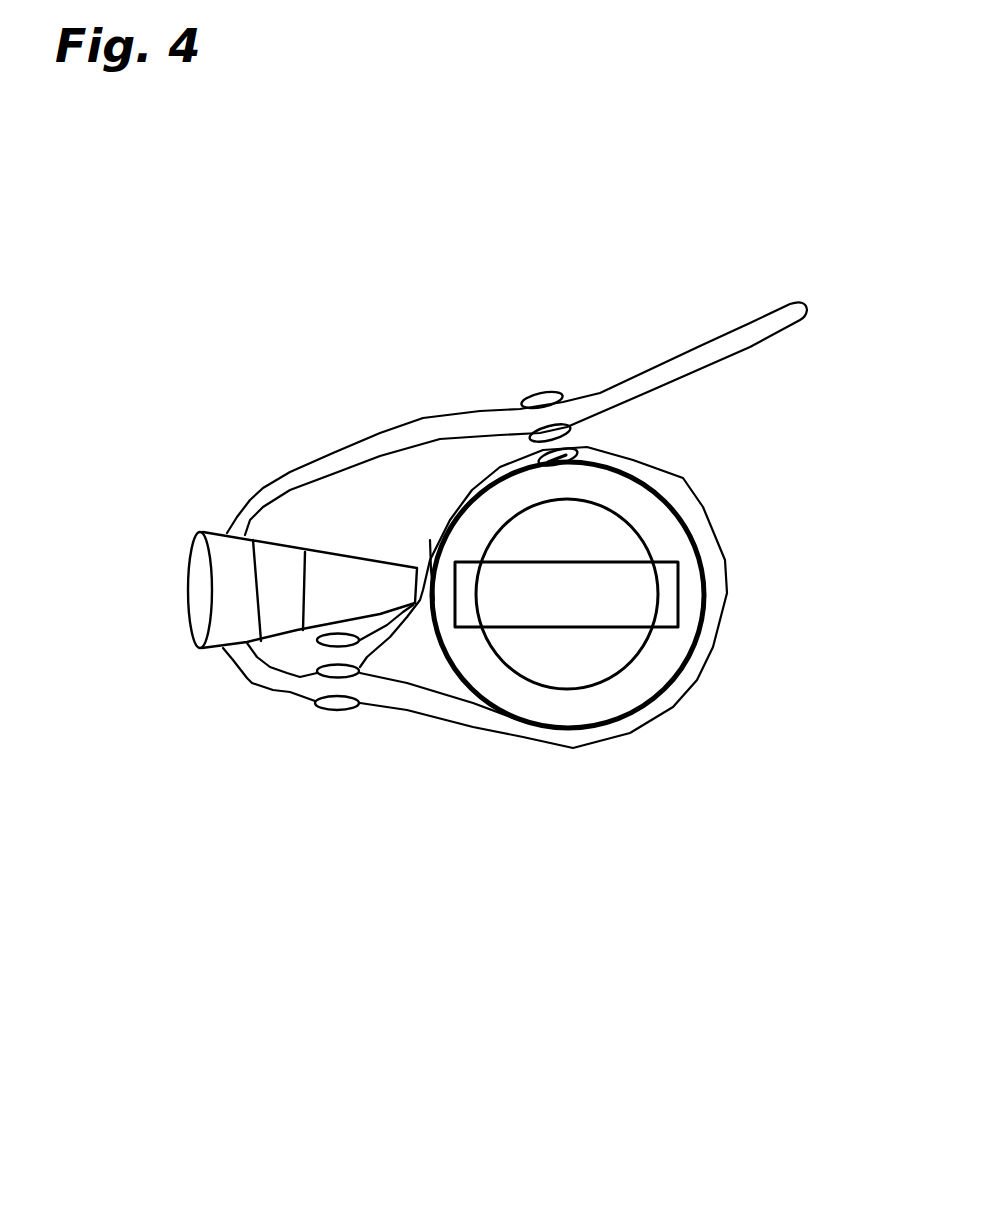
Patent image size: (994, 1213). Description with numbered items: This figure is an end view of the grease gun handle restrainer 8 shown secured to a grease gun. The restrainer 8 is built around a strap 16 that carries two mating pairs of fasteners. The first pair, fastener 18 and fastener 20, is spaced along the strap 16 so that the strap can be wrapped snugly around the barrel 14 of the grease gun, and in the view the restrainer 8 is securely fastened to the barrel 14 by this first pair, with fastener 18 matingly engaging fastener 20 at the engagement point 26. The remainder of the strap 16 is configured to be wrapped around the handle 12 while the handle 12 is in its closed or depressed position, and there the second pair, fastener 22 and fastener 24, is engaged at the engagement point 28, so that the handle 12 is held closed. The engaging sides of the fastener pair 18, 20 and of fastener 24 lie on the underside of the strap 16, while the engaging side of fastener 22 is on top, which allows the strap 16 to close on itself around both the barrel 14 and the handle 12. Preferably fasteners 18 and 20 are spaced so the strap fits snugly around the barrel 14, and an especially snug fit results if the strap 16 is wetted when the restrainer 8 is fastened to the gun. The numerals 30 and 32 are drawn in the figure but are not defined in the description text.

The restrainer 8 is at (463, 378).
The handle 12 is at (247, 588).
The barrel 14 is at (617, 650).
The strap 16 is at (528, 730).
The fastener 18 is at (318, 638).
The fastener 20 is at (333, 711).
The fastener 22 is at (572, 456).
The fastener 24 is at (550, 397).
The engagement of fasteners 18 and 20 26 is at (330, 676).
The engagement of fasteners 22 and 24 28 is at (567, 430).
The band loop 30 is at (700, 520).
The strap 32 is at (328, 453).